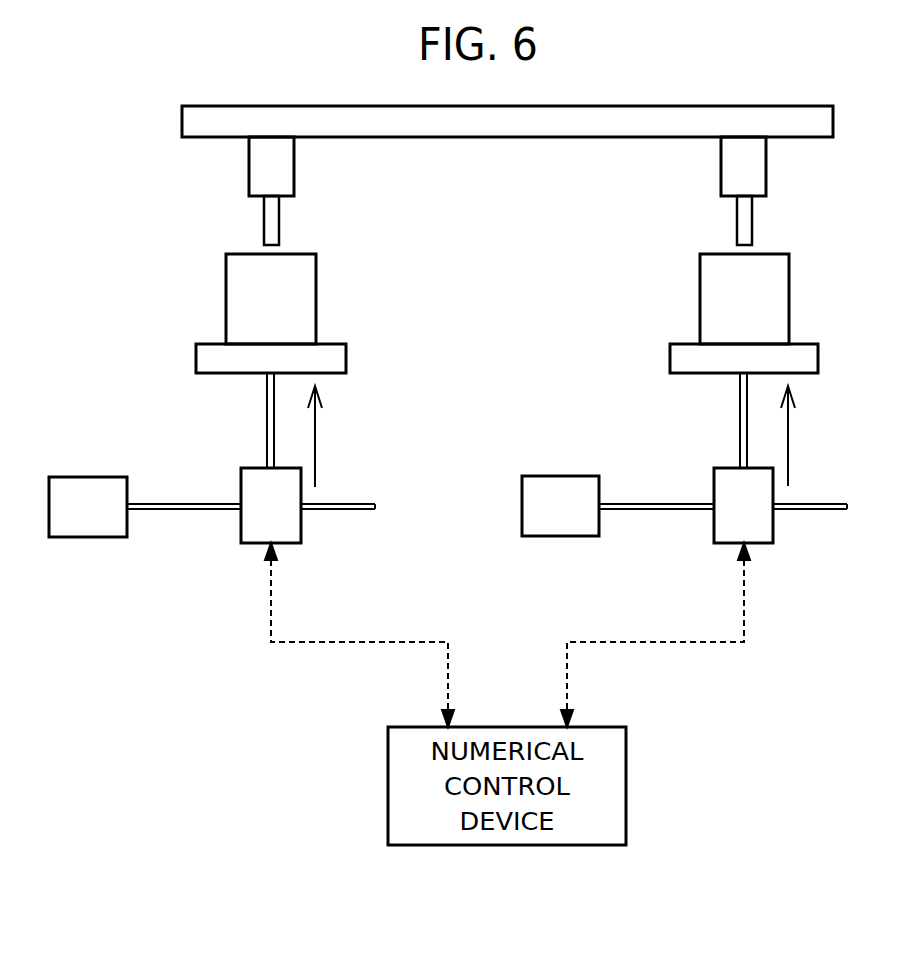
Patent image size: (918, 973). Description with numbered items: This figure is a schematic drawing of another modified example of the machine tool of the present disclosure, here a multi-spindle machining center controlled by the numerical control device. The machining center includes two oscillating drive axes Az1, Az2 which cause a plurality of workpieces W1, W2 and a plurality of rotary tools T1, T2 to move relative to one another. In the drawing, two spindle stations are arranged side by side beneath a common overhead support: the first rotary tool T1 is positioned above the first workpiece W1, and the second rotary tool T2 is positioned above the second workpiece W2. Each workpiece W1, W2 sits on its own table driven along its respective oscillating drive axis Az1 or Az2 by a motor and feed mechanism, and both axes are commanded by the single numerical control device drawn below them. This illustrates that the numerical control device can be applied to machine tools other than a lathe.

The rotary tool T1 is at (264, 222).
The rotary tool T2 is at (737, 222).
The workpiece W1 is at (226, 302).
The workpiece W2 is at (700, 302).
The oscillating drive axis Az1 is at (340, 436).
The oscillating drive axis Az2 is at (814, 436).